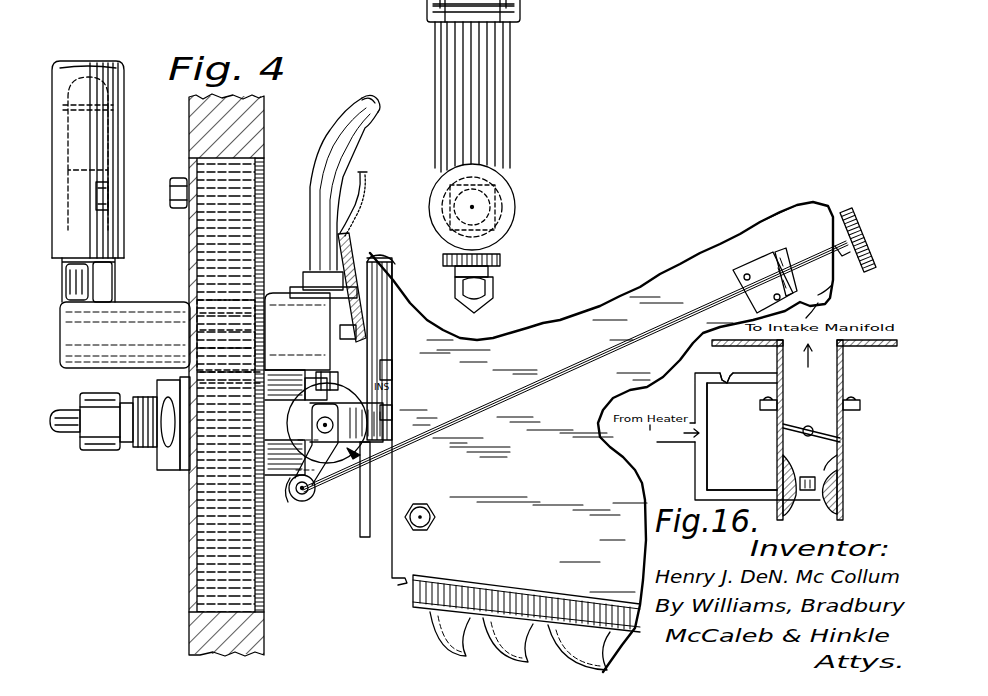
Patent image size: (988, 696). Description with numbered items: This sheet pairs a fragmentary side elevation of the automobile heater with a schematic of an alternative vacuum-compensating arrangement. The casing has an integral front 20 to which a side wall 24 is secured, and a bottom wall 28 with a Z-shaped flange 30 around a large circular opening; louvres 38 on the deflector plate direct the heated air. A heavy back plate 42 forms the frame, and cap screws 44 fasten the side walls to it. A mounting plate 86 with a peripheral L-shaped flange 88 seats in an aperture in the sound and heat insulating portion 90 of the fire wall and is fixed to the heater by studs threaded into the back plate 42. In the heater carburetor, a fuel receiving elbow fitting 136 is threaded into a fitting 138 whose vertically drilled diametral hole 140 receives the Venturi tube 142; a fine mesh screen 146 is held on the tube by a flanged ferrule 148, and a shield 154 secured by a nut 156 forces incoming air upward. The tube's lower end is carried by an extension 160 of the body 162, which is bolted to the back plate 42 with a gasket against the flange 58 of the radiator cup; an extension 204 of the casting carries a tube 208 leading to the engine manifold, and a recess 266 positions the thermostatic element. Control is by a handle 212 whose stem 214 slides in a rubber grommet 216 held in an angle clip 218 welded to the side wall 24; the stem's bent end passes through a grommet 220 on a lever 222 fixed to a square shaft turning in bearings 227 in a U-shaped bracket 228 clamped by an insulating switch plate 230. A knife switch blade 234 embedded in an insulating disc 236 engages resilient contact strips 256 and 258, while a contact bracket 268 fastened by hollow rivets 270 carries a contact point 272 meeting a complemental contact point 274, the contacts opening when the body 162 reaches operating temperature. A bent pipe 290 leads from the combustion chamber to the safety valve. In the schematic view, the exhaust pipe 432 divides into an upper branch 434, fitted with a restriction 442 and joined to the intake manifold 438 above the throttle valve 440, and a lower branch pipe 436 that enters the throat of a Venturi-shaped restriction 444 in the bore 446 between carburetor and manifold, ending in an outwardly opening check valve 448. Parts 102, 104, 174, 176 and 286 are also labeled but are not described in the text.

In FIG. 4, the front 20 is at (835, 282).
In FIG. 4, the side wall 24 is at (672, 325).
In FIG. 4, the bottom wall 28 is at (405, 573).
In FIG. 4, the Z-shaped flange 30 is at (470, 580).
In FIG. 4, the louvres 38 is at (516, 630).
In FIG. 4, the back plate 42 is at (391, 543).
In FIG. 4, the cap screws 44 is at (436, 514).
In FIG. 4, the flange 58 is at (398, 266).
In FIG. 4, the mounting plate 86 is at (262, 162).
In FIG. 4, the peripheral L-shaped flange 88 is at (262, 192).
In FIG. 4, the sound and heat insulating portion 90 is at (235, 118).
In FIG. 4, the clip 102 is at (178, 178).
In FIG. 4, the neck 104 is at (190, 245).
In FIG. 4, the fuel receiving elbow fitting 136 is at (497, 290).
In FIG. 4, the fitting 138 is at (126, 126).
In FIG. 4, the vertically drilled diametral hole 140 is at (92, 78).
In FIG. 4, the Venturi tube 142 is at (108, 198).
In FIG. 4, the fine mesh screen 146 is at (490, 198).
In FIG. 4, the flanged ferrule 148 is at (124, 108).
In FIG. 4, the shield 154 is at (108, 78).
In FIG. 4, the nut 156 is at (112, 298).
In FIG. 4, the extension 160 is at (140, 332).
In FIG. 4, the body 162 is at (276, 320).
In FIG. 4, the cap rib 174 is at (424, 6).
In FIG. 4, the cap ring 176 is at (350, 0).
In FIG. 4, the extension 204 is at (150, 448).
In FIG. 4, the tube 208 is at (77, 434).
In FIG. 4, the handle 212 is at (877, 198).
In FIG. 4, the stem 214 is at (616, 346).
In FIG. 4, the rubber grommet 216 is at (800, 212).
In FIG. 4, the angle clip 218 is at (760, 255).
In FIG. 4, the grommet 220 is at (314, 487).
In FIG. 4, the lever 222 is at (290, 500).
In FIG. 4, the bearings 227 is at (518, 22).
In FIG. 4, the U-shaped bracket 228 is at (385, 413).
In FIG. 4, the insulating switch plate 230 is at (385, 368).
In FIG. 4, the knife switch blade 234 is at (333, 343).
In FIG. 4, the disc 236 is at (395, 464).
In FIG. 4, the resilient contact strip 256 is at (262, 369).
In FIG. 4, the resilient contact strip 258 is at (623, 19).
In FIG. 4, the recess 266 is at (698, 34).
In FIG. 4, the contact bracket 268 is at (346, 232).
In FIG. 4, the hollow rivets 270 is at (361, 257).
In FIG. 4, the contact point 272 is at (352, 332).
In FIG. 4, the complemental contact point 274 is at (385, 320).
In FIG. 4, the lever arm 286 is at (367, 180).
In FIG. 4, the bent pipe 290 is at (370, 122).
In FIG. 16, the pipe 432 is at (708, 430).
In FIG. 16, the upper branch 434 is at (712, 393).
In FIG. 16, the lower branch pipe 436 is at (732, 490).
In FIG. 16, the intake manifold 438 is at (843, 375).
In FIG. 16, the throttle valve 440 is at (822, 433).
In FIG. 16, the restriction 442 is at (725, 380).
In FIG. 16, the Venturi-shaped restriction 444 is at (838, 472).
In FIG. 16, the bore 446 is at (837, 455).
In FIG. 16, the check valve 448 is at (822, 498).